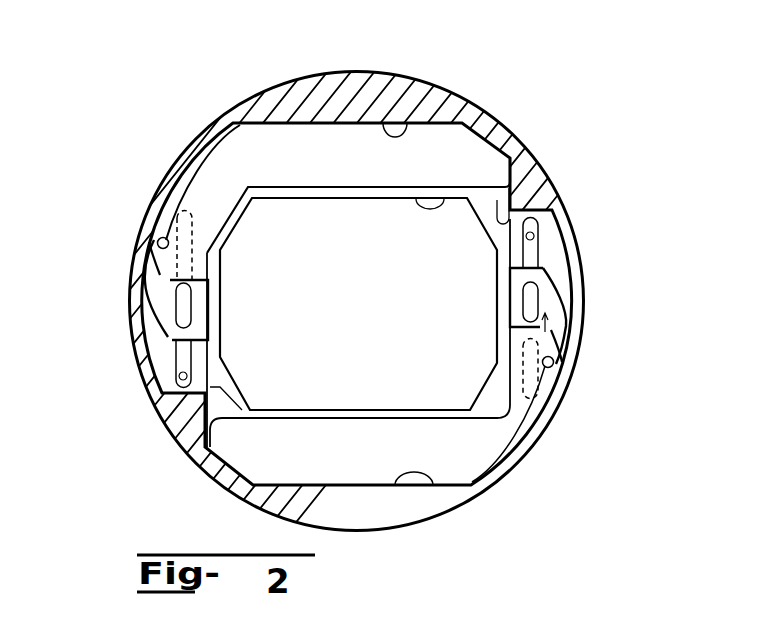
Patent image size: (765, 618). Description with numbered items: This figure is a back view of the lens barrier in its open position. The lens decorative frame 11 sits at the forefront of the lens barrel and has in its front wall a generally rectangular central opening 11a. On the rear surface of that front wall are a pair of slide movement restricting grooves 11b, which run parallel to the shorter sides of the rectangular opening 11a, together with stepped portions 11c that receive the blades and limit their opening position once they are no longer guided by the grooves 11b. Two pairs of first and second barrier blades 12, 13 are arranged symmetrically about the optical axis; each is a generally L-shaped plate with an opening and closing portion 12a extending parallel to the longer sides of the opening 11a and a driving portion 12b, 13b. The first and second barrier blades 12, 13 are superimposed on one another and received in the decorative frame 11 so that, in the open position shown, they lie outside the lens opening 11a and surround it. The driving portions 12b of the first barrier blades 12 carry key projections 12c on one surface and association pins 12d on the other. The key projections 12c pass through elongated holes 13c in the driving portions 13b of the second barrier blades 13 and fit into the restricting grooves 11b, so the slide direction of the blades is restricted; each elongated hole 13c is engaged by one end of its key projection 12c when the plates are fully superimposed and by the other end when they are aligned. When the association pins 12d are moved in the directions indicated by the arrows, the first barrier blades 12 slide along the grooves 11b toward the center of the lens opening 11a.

The lens decorative frame 11 is at (507, 152).
The rectangular central opening 11a is at (444, 199).
The slide movement restricting grooves 11b is at (532, 234).
The stepped portions 11c is at (388, 140).
The first barrier blade 12 is at (287, 150).
The opening and closing portion 12a is at (358, 304).
The driving portion 12b is at (224, 179).
The key projections 12c is at (537, 380).
The association pins 12d is at (554, 362).
The second barrier blade 13 is at (172, 306).
The driving portion 13b is at (566, 306).
The elongated holes 13c is at (538, 298).